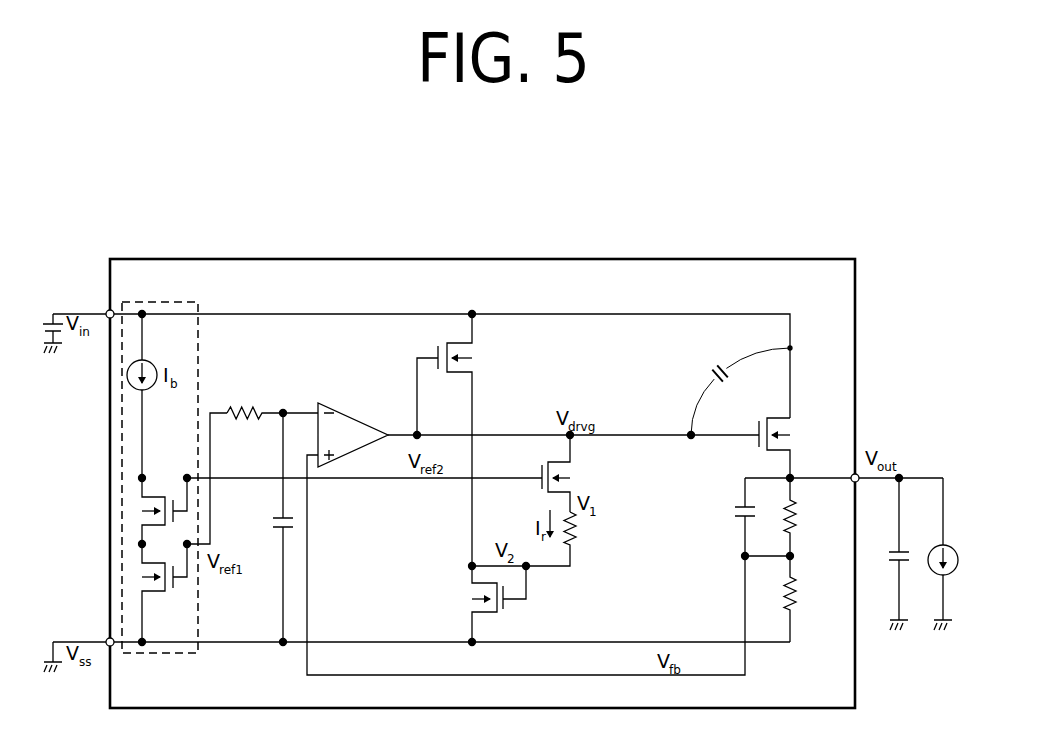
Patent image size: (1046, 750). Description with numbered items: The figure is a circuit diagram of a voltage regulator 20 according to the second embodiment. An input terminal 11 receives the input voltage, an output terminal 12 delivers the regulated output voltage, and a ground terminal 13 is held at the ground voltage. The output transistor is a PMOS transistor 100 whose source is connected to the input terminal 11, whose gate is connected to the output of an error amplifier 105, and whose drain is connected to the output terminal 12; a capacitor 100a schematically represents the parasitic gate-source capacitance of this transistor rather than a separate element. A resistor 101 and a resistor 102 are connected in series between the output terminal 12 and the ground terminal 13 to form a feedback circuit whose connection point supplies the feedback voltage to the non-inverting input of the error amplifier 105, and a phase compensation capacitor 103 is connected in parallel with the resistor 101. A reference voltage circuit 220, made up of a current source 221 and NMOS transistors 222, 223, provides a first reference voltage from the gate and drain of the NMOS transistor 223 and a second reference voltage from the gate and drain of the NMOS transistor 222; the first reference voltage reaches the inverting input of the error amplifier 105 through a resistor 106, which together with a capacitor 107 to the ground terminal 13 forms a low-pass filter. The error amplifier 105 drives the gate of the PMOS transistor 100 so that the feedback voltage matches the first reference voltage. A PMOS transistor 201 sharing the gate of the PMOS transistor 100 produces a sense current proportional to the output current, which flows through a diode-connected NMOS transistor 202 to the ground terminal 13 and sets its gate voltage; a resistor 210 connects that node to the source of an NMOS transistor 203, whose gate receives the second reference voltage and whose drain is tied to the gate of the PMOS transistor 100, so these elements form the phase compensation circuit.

The voltage regulator 20 is at (855, 258).
The input terminal 11 is at (107, 312).
The output terminal 12 is at (858, 481).
The ground terminal 13 is at (107, 640).
The reference voltage circuit 220 is at (200, 303).
The current source 221 is at (150, 362).
The NMOS transistor 222 is at (148, 493).
The NMOS transistor 223 is at (155, 591).
The resistor 106 is at (228, 406).
The capacitor 107 is at (270, 519).
The error amplifier 105 is at (328, 407).
The PMOS transistor 201 is at (468, 358).
The NMOS transistor 202 is at (470, 598).
The NMOS transistor 203 is at (575, 478).
The resistor 210 is at (577, 531).
The PMOS transistor 100 is at (775, 416).
The capacitor 100a is at (713, 373).
The resistor 101 is at (797, 520).
The resistor 102 is at (797, 600).
The phase compensation capacitor 103 is at (738, 503).